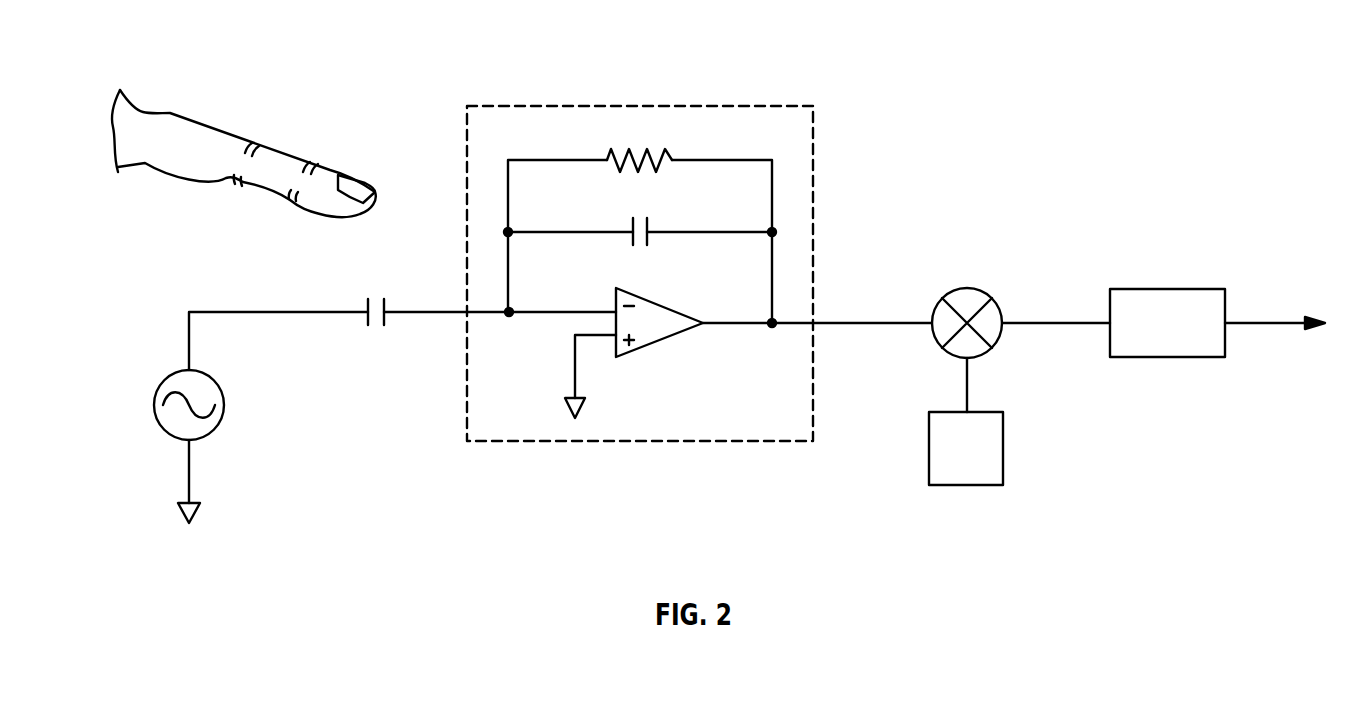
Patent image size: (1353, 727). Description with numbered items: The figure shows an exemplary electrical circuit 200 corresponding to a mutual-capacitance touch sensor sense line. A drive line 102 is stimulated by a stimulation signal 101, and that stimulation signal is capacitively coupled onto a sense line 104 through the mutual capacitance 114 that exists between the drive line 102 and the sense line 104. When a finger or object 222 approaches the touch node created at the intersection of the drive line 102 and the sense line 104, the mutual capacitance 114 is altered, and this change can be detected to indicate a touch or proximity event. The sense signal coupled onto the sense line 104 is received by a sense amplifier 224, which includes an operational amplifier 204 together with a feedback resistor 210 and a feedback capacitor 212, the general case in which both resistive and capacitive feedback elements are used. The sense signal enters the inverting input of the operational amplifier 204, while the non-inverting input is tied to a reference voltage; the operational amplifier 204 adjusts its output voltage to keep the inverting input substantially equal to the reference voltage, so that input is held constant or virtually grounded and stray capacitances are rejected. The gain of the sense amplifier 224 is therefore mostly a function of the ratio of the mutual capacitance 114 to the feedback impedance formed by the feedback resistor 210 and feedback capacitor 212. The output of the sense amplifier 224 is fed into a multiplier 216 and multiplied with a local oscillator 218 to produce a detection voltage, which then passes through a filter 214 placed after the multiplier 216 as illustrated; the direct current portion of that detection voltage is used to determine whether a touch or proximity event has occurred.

The electrical circuit 200 is at (1063, 45).
The finger or object 222 is at (193, 130).
The stimulation signal 101 is at (168, 374).
The drive line 102 is at (240, 309).
The mutual capacitance 114 is at (367, 302).
The sense line 104 is at (428, 313).
The sense amplifier 224 is at (482, 442).
The operational amplifier 204 is at (662, 340).
The feedback resistor 210 is at (667, 155).
The feedback capacitor 212 is at (653, 222).
The multiplier 216 is at (948, 295).
The local oscillator 218 is at (967, 487).
The filter 214 is at (1170, 289).